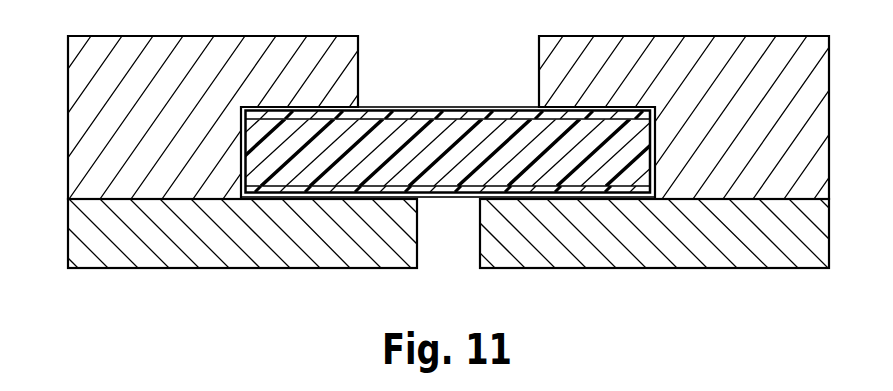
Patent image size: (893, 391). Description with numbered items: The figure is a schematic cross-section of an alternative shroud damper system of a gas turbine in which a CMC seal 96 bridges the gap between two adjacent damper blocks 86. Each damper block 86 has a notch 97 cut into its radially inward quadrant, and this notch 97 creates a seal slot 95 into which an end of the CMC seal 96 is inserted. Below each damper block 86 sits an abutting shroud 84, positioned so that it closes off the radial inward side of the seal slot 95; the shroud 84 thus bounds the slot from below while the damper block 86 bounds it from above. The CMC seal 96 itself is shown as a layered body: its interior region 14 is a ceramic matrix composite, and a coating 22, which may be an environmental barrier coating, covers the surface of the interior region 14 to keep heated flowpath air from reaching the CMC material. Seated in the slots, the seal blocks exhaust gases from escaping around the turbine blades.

The damper block 86 is at (147, 120).
The shroud 84 is at (263, 223).
The CMC seal 96 is at (433, 172).
The notch 97 is at (240, 150).
The seal slot 95 is at (245, 163).
The coating 22 is at (397, 116).
The interior region 14 is at (422, 165).